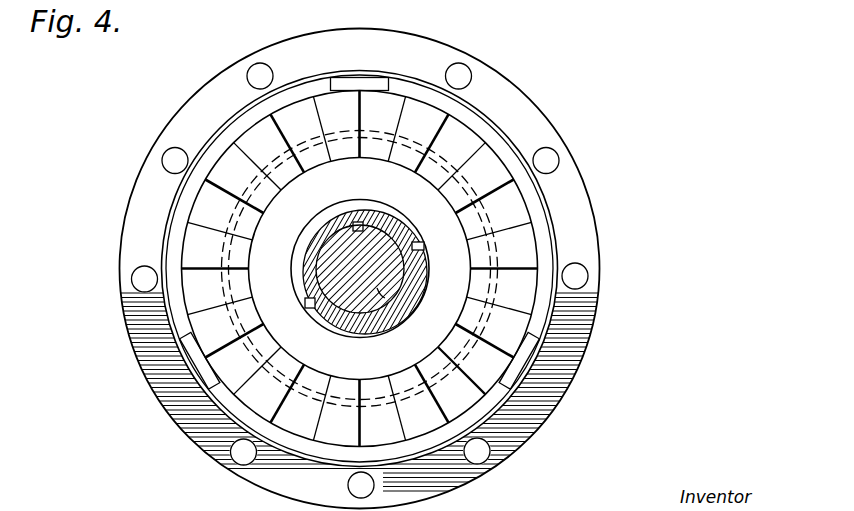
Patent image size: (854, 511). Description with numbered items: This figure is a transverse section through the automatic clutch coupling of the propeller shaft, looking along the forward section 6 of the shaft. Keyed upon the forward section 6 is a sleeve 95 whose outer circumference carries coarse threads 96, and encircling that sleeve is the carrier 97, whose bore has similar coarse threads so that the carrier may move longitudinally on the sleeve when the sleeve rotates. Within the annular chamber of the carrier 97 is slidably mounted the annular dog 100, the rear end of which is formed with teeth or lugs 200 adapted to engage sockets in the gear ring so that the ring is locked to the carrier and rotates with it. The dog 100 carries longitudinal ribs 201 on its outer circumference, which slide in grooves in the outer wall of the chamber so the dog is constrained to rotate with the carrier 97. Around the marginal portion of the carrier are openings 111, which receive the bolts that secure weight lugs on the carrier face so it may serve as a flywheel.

The forward section 6 is at (407, 305).
The sleeve 95 is at (341, 322).
The coarse threads 96 is at (305, 277).
The carrier 97 is at (355, 267).
The annular dog 100 is at (343, 150).
The openings 111 is at (464, 70).
The teeth or lugs 200 is at (425, 120).
The longitudinal ribs 201 is at (366, 77).